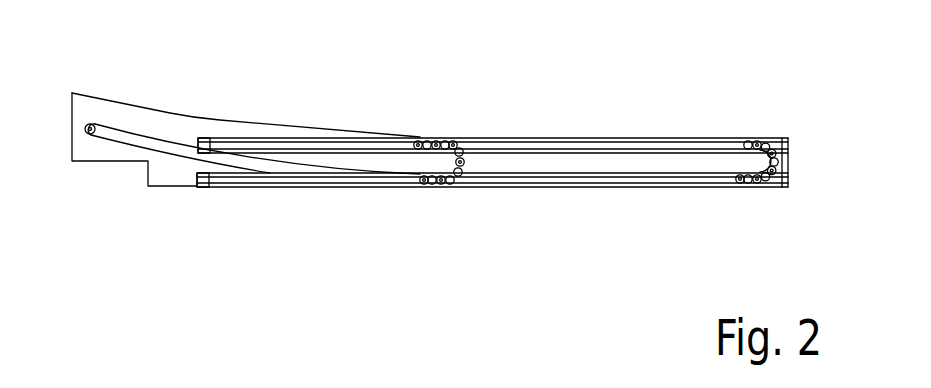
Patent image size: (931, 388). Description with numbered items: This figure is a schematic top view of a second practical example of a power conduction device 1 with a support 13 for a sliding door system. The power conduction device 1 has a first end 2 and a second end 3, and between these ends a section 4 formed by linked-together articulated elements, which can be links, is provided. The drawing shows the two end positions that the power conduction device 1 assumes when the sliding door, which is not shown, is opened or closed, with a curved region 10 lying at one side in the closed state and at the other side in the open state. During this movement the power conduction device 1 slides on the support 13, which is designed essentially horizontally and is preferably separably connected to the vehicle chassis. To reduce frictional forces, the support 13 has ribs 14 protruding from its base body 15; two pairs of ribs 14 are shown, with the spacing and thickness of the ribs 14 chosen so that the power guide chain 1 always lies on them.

The power conduction device 1 is at (537, 148).
The first end 2 is at (420, 137).
The second end 3 is at (86, 134).
The section 4 is at (308, 172).
The curved region 10 is at (453, 177).
The support 13 is at (358, 160).
The ribs 14 is at (220, 150).
The base body 15 is at (635, 165).